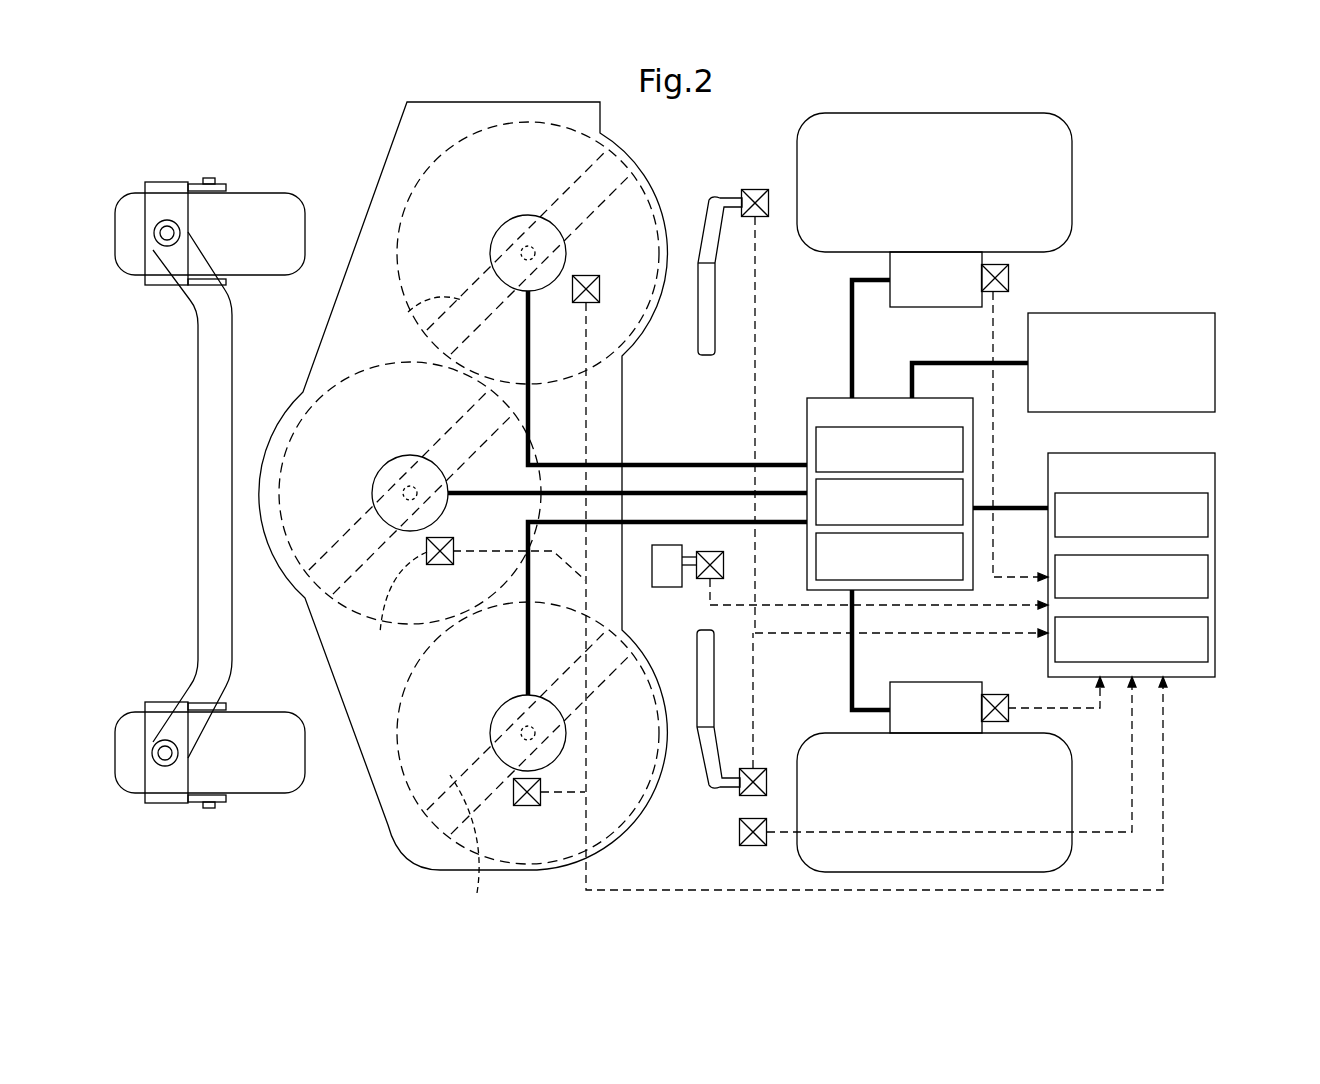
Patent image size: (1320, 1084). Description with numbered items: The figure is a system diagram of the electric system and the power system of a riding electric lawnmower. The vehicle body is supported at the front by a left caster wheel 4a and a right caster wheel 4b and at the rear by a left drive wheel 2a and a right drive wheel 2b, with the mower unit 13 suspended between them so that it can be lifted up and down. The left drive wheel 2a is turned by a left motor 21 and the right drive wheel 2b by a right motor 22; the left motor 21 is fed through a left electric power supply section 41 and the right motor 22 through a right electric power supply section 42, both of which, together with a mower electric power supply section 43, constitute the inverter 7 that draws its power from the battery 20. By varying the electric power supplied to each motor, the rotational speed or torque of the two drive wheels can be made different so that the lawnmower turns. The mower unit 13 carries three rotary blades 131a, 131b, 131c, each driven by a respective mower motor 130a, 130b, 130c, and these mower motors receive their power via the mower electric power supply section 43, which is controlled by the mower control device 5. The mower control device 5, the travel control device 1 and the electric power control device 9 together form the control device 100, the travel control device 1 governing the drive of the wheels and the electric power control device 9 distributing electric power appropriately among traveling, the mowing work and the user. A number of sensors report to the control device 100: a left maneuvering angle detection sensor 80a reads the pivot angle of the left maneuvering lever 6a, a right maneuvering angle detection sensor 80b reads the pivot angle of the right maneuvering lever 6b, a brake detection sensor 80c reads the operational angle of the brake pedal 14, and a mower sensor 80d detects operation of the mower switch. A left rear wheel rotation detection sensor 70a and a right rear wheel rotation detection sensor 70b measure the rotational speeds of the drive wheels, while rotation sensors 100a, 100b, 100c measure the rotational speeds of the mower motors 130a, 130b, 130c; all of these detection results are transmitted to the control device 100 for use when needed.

The mower unit 13 is at (376, 181).
The right caster wheel 4b is at (240, 195).
The left caster wheel 4a is at (245, 780).
The mower motor 130c is at (528, 222).
The mower motor 130b is at (410, 460).
The mower motor 130a is at (498, 712).
The rotary blade 131c is at (428, 302).
The rotary blade 131b is at (312, 568).
The rotary blade 131a is at (480, 852).
The rotation sensor 100c is at (602, 289).
The rotation sensor 100b is at (432, 566).
The rotation sensor 100a is at (527, 806).
The right drive wheel 2b is at (935, 130).
The left drive wheel 2a is at (930, 872).
The right motor 22 is at (930, 292).
The left motor 21 is at (930, 682).
The right rear wheel rotation detection sensor 70b is at (1010, 278).
The left rear wheel rotation detection sensor 70a is at (1008, 708).
The right maneuvering lever 6b is at (715, 315).
The left maneuvering lever 6a is at (714, 675).
The right maneuvering angle detection sensor 80b is at (755, 188).
The brake detection sensor 80c is at (723, 565).
The left maneuvering angle detection sensor 80a is at (767, 782).
The mower sensor 80d is at (740, 832).
The brake pedal 14 is at (670, 587).
The battery 20 is at (1150, 313).
The inverter 7 is at (950, 398).
The left electric power supply section 41 is at (816, 440).
The right electric power supply section 42 is at (816, 490).
The mower electric power supply section 43 is at (963, 560).
The control device 100 is at (1208, 453).
The travel control device 1 is at (1208, 508).
The mower control device 5 is at (1208, 583).
The electric power control device 9 is at (1208, 645).